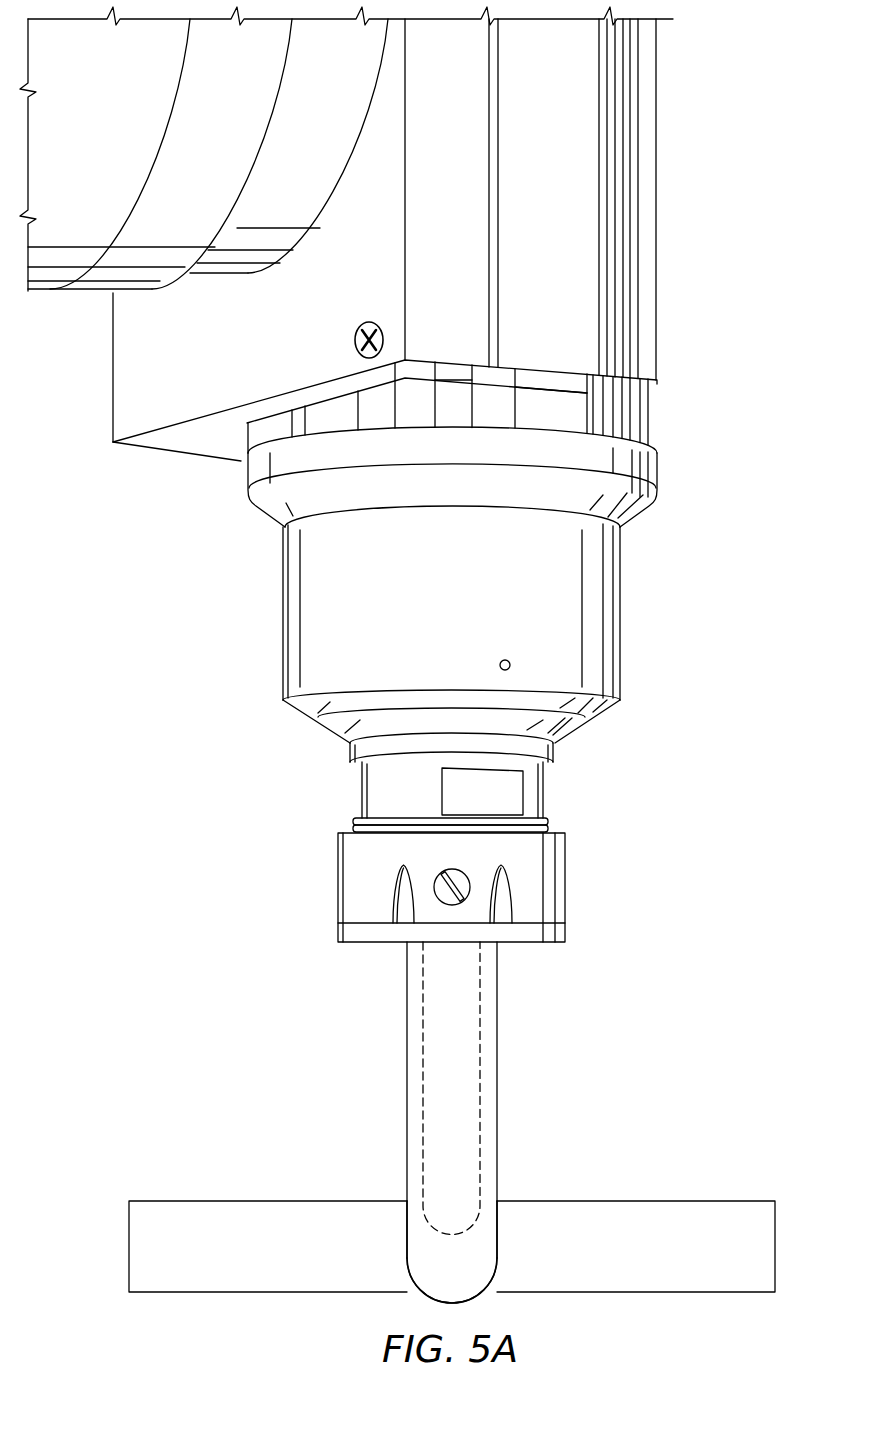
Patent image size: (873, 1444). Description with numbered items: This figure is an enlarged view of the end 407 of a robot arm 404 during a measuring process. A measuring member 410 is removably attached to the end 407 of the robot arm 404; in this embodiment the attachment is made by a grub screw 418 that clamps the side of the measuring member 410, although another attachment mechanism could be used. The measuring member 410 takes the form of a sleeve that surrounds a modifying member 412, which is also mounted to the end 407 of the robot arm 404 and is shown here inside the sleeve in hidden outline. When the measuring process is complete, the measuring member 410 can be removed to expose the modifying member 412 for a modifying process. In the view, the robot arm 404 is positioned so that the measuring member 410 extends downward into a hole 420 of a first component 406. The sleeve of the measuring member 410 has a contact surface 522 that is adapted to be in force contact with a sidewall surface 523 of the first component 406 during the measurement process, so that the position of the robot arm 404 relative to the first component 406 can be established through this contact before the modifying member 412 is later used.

The robot arm 404 is at (77, 292).
The end of robot arm 407 is at (453, 480).
The grub screw 418 is at (433, 883).
The modifying member 412 is at (423, 988).
The measuring member 410 is at (498, 1010).
The first component 406 is at (266, 1201).
The contact surface 522 is at (407, 1227).
The hole 420 is at (498, 1228).
The sidewall surface 523 is at (407, 1252).